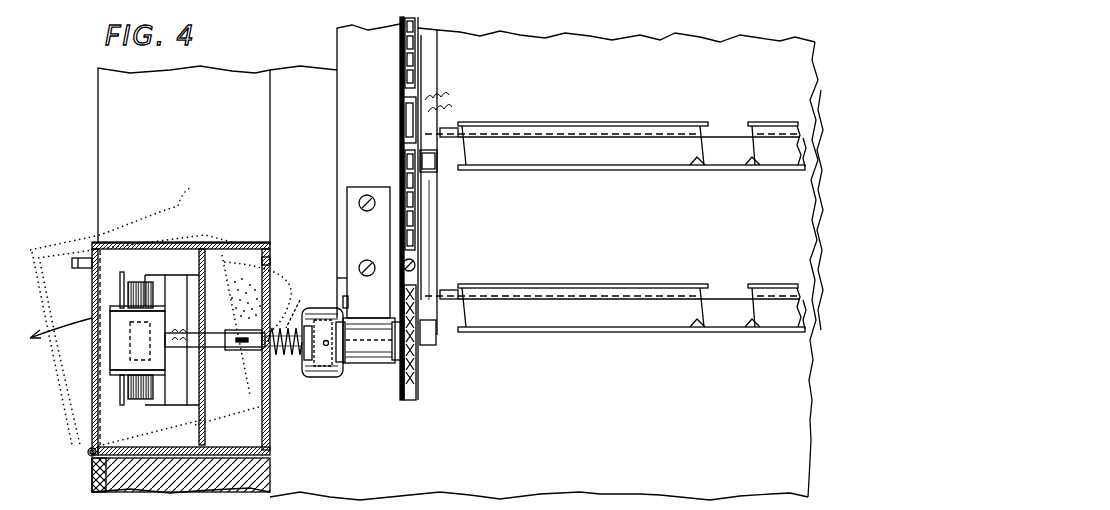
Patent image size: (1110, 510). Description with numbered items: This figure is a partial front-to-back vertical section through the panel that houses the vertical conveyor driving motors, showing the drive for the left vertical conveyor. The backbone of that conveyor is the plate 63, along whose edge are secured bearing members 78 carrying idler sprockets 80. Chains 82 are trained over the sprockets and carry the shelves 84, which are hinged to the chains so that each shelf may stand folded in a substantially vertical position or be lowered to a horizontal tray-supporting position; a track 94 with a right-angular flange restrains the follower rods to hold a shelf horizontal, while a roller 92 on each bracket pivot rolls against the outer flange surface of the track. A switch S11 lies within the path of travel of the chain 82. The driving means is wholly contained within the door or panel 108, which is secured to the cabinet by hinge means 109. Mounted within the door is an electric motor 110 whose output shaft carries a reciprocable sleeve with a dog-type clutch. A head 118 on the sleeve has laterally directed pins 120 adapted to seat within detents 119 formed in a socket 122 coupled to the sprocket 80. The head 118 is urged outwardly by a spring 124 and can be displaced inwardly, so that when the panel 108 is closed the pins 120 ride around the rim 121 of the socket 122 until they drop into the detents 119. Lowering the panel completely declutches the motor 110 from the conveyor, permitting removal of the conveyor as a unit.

The plate 63 is at (648, 82).
The shelves 84 is at (598, 170).
The chains 82 is at (418, 75).
The switch S11 is at (403, 123).
The roller 92 is at (428, 178).
The track 94 is at (428, 242).
The bearing members 78 is at (352, 232).
The idler sprockets 80 is at (395, 365).
The door or panel 108 is at (160, 243).
The hinge means 109 is at (88, 453).
The electric motor 110 is at (118, 366).
The head 118 is at (268, 261).
The detents 119 is at (318, 320).
The pins 120 is at (305, 365).
The rim 121 is at (300, 377).
The socket 122 is at (345, 376).
The spring 124 is at (288, 328).